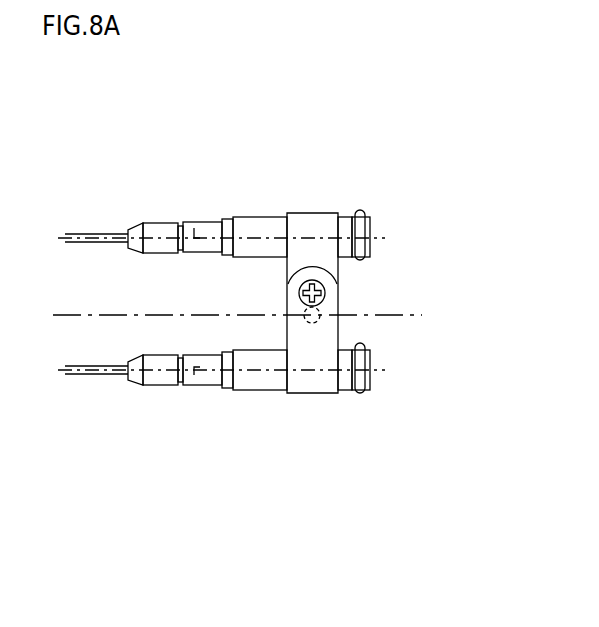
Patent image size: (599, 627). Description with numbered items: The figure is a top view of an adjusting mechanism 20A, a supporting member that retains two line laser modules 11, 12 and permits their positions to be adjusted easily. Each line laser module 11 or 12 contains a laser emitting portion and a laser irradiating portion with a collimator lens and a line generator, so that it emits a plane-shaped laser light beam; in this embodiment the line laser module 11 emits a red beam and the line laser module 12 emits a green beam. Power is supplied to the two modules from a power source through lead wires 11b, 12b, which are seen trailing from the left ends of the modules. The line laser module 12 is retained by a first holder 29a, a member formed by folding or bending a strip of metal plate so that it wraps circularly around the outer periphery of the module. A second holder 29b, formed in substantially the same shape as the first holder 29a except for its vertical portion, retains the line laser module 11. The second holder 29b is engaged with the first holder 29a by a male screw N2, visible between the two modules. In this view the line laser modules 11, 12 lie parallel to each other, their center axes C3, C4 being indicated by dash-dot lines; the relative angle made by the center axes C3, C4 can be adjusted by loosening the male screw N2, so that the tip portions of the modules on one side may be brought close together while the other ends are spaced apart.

The adjusting mechanism 20A is at (278, 142).
The lead wire 12b is at (102, 232).
The center axis C4 is at (193, 222).
The line laser module 12 is at (262, 225).
The first holder 29a is at (318, 220).
The male screw N2 is at (328, 293).
The second holder 29b is at (333, 328).
The lead wire 11b is at (103, 377).
The center axis C3 is at (197, 386).
The line laser module 11 is at (258, 390).